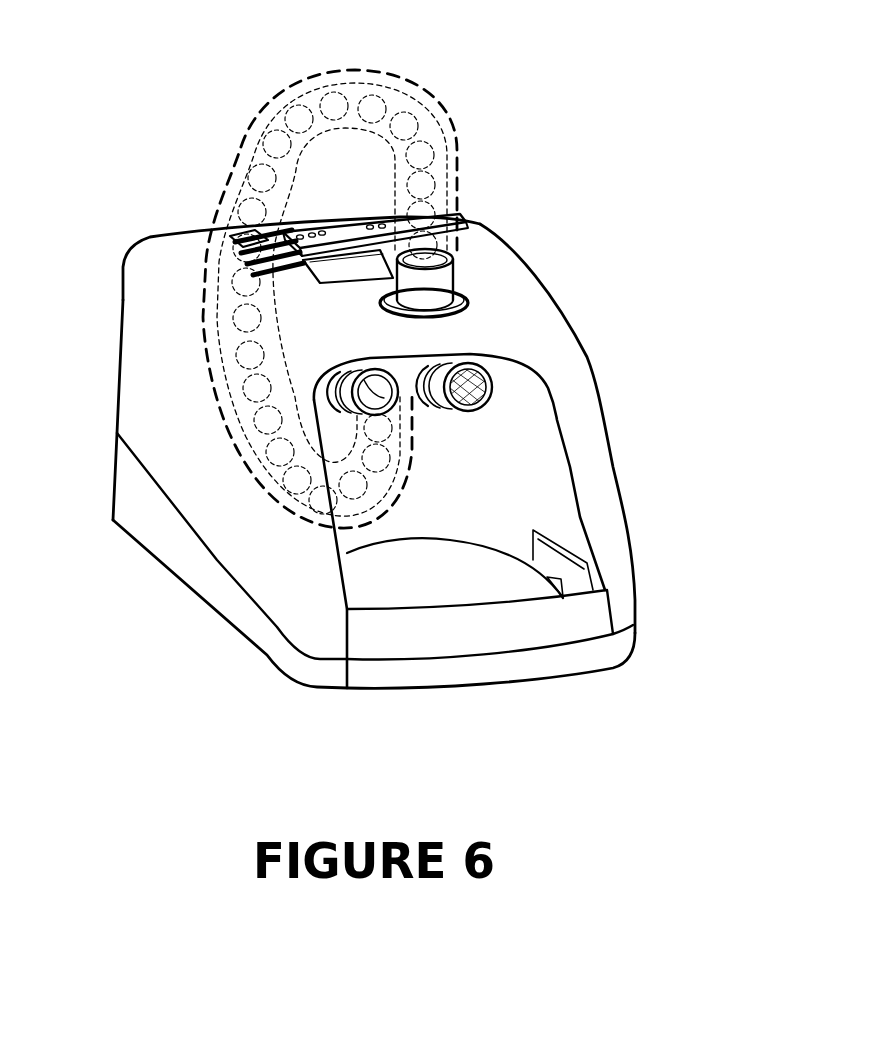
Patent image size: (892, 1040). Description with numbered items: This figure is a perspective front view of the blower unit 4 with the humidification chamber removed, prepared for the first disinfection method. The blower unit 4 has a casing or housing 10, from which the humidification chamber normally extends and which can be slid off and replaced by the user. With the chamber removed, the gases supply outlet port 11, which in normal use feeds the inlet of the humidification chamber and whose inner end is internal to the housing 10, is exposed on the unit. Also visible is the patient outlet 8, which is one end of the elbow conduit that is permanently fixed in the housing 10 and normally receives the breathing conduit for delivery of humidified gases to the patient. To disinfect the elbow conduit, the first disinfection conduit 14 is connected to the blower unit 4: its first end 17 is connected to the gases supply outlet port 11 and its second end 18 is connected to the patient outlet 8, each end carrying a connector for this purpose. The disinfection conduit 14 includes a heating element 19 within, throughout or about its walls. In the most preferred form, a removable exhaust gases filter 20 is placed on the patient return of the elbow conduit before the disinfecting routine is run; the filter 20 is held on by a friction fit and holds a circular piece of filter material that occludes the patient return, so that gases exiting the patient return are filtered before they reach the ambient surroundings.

The blower unit 4 is at (627, 243).
The patient outlet 8 is at (300, 223).
The housing 10 is at (618, 562).
The gases supply outlet port 11 is at (384, 398).
The first disinfection conduit 14 is at (204, 263).
The first end 17 is at (368, 418).
The second end 18 is at (457, 250).
The heating element 19 is at (317, 92).
The exhaust gases filter 20 is at (493, 378).